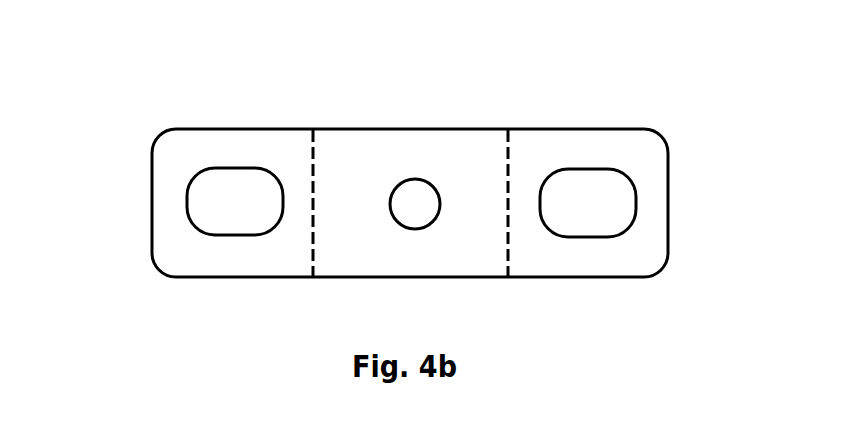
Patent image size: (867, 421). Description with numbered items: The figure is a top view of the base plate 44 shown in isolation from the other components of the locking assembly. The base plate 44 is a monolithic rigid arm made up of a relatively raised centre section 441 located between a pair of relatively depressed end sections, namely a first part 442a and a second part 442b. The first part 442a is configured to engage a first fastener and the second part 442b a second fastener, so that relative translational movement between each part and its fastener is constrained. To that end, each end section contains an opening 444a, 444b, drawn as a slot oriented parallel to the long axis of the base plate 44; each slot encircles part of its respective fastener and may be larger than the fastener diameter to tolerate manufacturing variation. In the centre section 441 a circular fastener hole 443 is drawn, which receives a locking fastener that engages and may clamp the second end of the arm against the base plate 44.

The base plate 44 is at (689, 79).
The centre section 441 is at (363, 168).
The first part 442a is at (568, 148).
The second part 442b is at (223, 145).
The central hole 443 is at (413, 192).
The opening 444a is at (607, 200).
The opening 444b is at (228, 195).